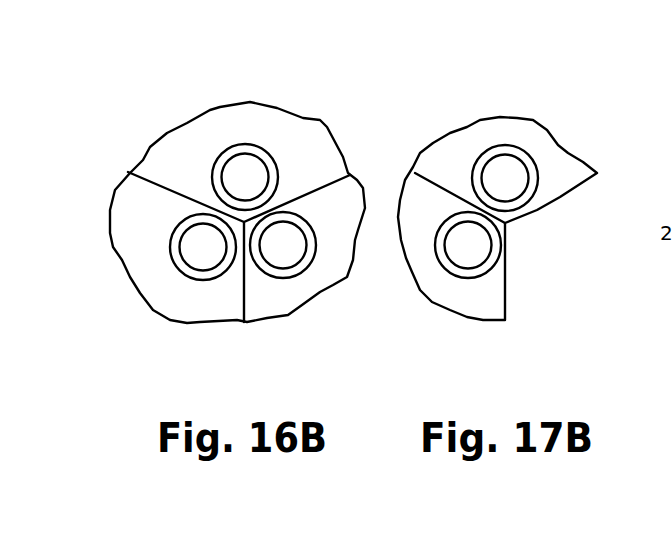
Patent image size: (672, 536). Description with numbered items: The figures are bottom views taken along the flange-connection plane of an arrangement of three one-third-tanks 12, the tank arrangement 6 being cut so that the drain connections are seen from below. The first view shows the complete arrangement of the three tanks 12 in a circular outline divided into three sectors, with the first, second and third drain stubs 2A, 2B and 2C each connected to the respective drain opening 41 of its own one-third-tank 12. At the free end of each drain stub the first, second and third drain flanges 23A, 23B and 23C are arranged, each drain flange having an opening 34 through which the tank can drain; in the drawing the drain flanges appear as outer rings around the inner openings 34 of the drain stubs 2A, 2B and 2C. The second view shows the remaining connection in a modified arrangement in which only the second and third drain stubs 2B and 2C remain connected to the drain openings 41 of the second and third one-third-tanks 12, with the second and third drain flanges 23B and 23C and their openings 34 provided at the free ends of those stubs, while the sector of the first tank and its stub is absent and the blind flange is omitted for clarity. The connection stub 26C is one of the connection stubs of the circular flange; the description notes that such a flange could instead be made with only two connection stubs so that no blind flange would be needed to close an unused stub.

In FIG. 16B, the multi-lumen catheter body 6 is at (212, 207).
In FIG. 17B, the multi-lumen catheter body 6 is at (497, 177).
In FIG. 16B, the one-third-tank 12 is at (217, 130).
In FIG. 17B, the one-third-tank 12 is at (500, 130).
In FIG. 16B, the first drain stub 2A is at (314, 261).
In FIG. 16B, the second drain stub 2B is at (298, 132).
In FIG. 17B, the second drain stub 2B is at (569, 187).
In FIG. 16B, the third drain stub 2C is at (133, 284).
In FIG. 17B, the third drain stub 2C is at (435, 286).
In FIG. 16B, the first drain flange 23A is at (308, 230).
In FIG. 16B, the second drain flange 23B is at (276, 166).
In FIG. 17B, the second drain flange 23B is at (534, 177).
In FIG. 16B, the third drain flange 23C is at (178, 230).
In FIG. 17B, the third drain flange 23C is at (438, 248).
In FIG. 16B, the opening 34 is at (226, 211).
In FIG. 17B, the opening 34 is at (516, 230).
In FIG. 16B, the drain opening 41 is at (240, 173).
In FIG. 17B, the drain opening 41 is at (505, 178).
In FIG. 16B, the connection stub 26C is at (130, 10).